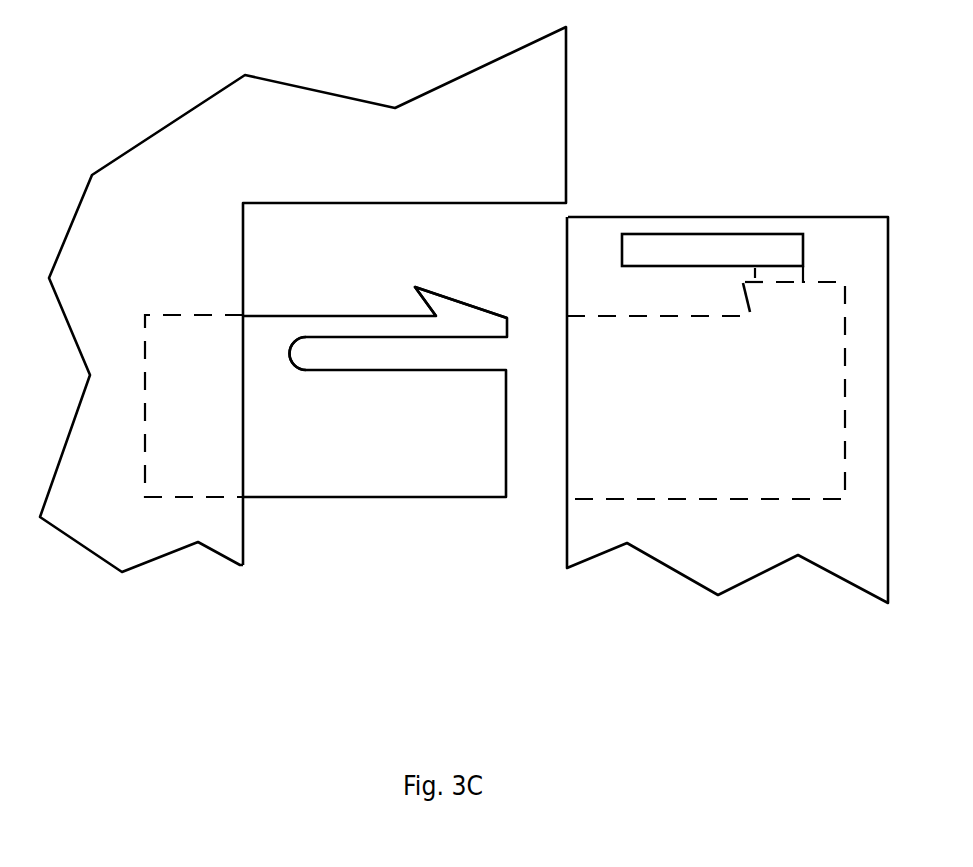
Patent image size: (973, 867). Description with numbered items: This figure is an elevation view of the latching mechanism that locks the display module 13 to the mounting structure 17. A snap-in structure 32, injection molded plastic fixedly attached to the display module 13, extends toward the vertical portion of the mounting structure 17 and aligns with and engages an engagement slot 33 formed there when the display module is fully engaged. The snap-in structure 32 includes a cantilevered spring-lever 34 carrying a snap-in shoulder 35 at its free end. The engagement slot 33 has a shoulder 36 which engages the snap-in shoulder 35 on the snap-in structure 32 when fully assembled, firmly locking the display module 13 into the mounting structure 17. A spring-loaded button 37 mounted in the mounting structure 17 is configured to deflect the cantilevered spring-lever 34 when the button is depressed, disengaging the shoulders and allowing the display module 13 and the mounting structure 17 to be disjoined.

The display module 13 is at (185, 123).
The mounting structure 17 is at (888, 255).
The snap-in structure 32 is at (378, 520).
The engagement slot 33 is at (662, 522).
The cantilevered spring-lever 34 is at (360, 327).
The snap-in shoulder 35 is at (452, 293).
The shoulder 36 is at (767, 303).
The spring-loaded button 37 is at (680, 250).